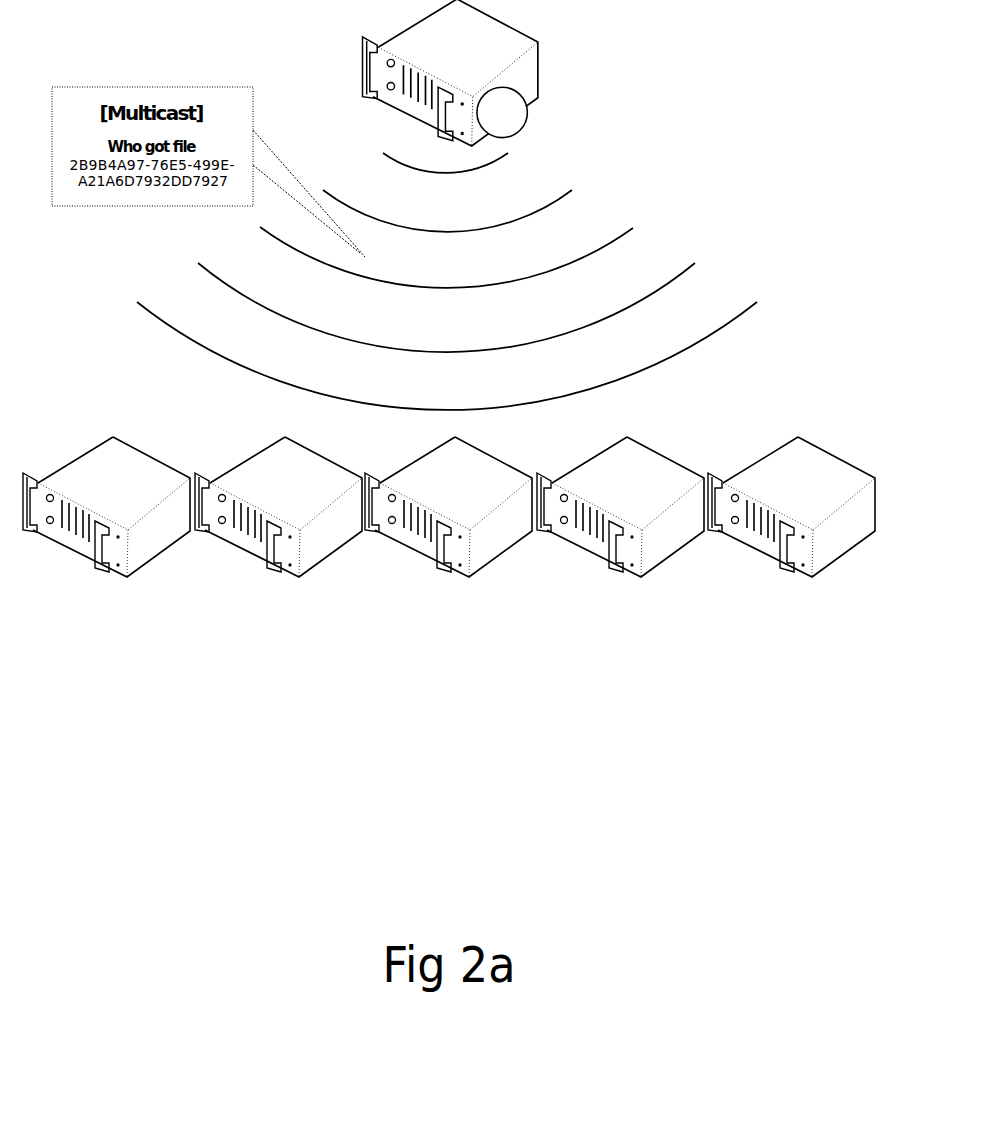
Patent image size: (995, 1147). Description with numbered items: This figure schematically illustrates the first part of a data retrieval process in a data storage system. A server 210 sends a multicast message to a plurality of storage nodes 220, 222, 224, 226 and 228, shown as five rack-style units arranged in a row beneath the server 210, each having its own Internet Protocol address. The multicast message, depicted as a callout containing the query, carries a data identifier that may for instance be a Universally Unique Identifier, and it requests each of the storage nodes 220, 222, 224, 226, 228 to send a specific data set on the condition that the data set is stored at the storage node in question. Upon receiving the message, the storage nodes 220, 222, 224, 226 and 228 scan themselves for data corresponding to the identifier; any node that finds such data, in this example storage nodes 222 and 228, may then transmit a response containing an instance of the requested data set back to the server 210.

The server 210 is at (507, 53).
The storage node 220 is at (92, 623).
The storage node 222 is at (265, 623).
The storage node 224 is at (447, 622).
The storage node 226 is at (613, 622).
The storage node 228 is at (790, 624).